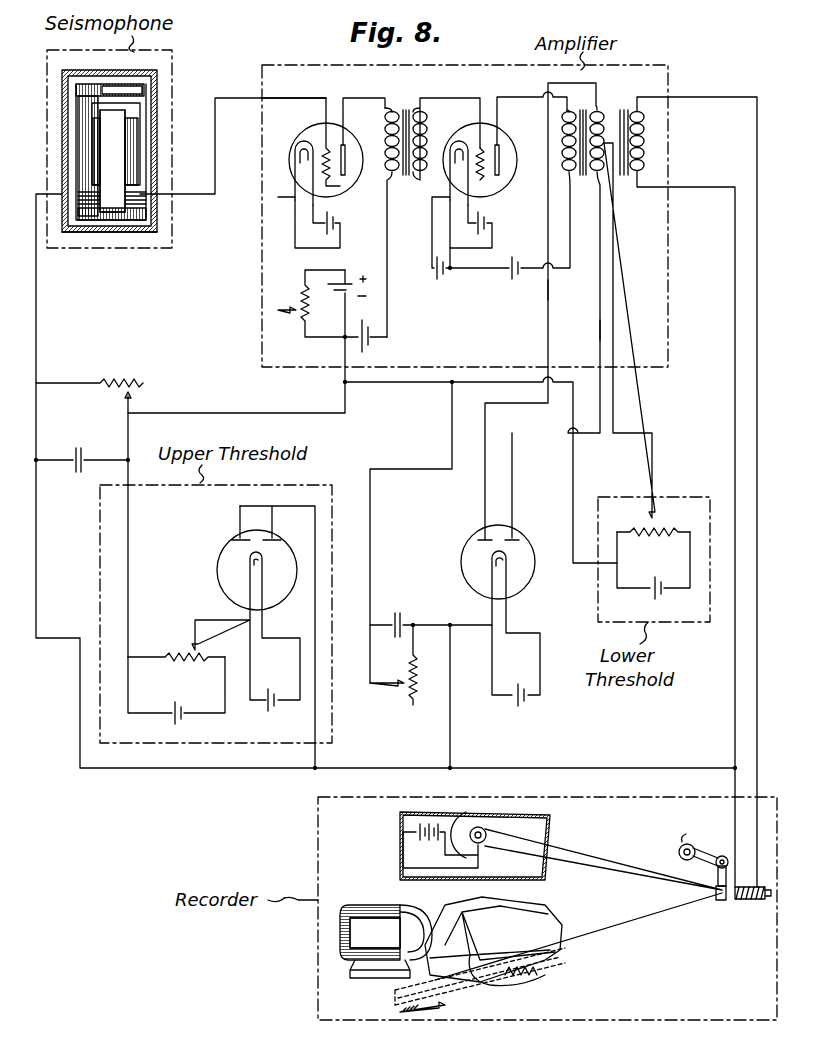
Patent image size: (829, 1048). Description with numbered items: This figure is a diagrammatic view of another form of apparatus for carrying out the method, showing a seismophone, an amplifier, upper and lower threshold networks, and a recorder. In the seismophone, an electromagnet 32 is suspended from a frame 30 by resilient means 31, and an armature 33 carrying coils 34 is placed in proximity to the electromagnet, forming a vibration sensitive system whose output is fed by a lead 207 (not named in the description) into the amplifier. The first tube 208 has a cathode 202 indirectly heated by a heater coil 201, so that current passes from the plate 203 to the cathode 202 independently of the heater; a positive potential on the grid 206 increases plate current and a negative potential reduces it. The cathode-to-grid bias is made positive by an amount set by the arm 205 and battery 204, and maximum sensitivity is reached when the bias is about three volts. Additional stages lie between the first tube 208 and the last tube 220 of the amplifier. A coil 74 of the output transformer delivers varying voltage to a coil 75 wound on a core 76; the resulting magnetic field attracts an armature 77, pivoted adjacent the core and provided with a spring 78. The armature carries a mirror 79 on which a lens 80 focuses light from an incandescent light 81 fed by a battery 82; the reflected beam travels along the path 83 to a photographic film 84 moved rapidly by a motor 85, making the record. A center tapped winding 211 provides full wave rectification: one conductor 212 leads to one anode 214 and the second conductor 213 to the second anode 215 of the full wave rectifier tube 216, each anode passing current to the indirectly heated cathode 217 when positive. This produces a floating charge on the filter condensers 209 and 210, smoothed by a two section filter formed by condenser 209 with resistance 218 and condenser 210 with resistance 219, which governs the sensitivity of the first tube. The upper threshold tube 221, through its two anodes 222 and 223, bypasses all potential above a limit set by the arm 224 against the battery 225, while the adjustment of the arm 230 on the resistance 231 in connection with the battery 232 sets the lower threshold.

The frame 30 is at (157, 112).
The resilient means 31 is at (128, 70).
The electromagnet 32 is at (140, 153).
The armature 33 is at (120, 232).
The coils 34 is at (146, 208).
The coil 74 is at (645, 140).
The coil 75 is at (748, 900).
The core 76 is at (766, 900).
The armature 77 is at (722, 900).
The spring 78 is at (692, 846).
The mirror 79 is at (716, 900).
The lens 80 is at (568, 856).
The incandescent light 81 is at (486, 840).
The battery 82 is at (400, 830).
The path 83 is at (612, 928).
The photographic film 84 is at (530, 968).
The motor 85 is at (375, 905).
The heater coil 201 is at (312, 213).
The cathode 202 is at (296, 148).
The plate 203 is at (345, 152).
The battery 204 is at (350, 270).
The arm 205 is at (298, 315).
The grid 206 is at (340, 186).
The input lead 207 is at (280, 98).
The tube 208 is at (382, 120).
The filter condenser 209 is at (400, 612).
The filter condenser 210 is at (80, 446).
The center tapped winding 211 is at (597, 108).
The conductor 212 is at (600, 332).
The second conductor 213 is at (550, 290).
The anode 214 is at (512, 530).
The second anode 215 is at (478, 540).
The full wave rectifier tube 216 is at (528, 548).
The cathode 217 is at (492, 560).
The resistance 218 is at (412, 703).
The resistance 219 is at (126, 378).
The tube 220 is at (503, 133).
The tube 221 is at (278, 532).
The anode 222 is at (258, 525).
The anode 223 is at (232, 540).
The arm 224 is at (195, 630).
The battery 225 is at (182, 705).
The arm 230 is at (654, 510).
The resistance 231 is at (640, 536).
The battery 232 is at (655, 600).